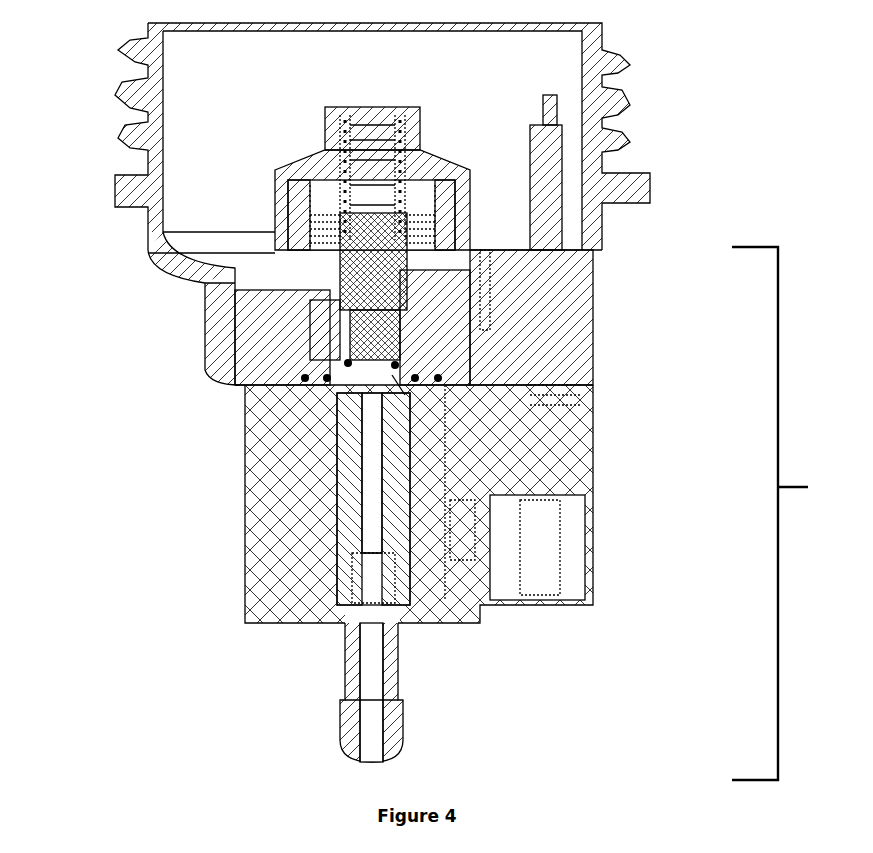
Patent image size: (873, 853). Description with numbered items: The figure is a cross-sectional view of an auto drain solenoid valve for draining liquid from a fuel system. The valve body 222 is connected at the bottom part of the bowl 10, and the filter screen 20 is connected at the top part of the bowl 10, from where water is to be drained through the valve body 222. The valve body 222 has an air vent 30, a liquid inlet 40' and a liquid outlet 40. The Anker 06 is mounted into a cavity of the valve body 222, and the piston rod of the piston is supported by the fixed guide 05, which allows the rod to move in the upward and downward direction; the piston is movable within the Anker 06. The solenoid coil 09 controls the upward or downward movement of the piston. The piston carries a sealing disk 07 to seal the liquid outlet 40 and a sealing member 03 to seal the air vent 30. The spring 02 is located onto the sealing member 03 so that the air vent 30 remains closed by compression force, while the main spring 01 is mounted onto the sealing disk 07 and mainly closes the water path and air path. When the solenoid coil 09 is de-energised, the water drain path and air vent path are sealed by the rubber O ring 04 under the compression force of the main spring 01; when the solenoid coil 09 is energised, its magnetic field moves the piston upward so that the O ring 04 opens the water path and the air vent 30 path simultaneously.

The main spring 01 is at (340, 137).
The filter screen 20 is at (410, 120).
The spring 02 is at (313, 220).
The bowl 10 is at (652, 197).
The sealing member 03 is at (428, 275).
The sealing disk 07 is at (380, 310).
The air vent 30 is at (323, 293).
The O ring 04 is at (395, 368).
The solenoid coil 09 is at (433, 555).
The fixed guide 05 is at (347, 438).
The Anker 06 is at (347, 570).
The liquid inlet 40' is at (531, 489).
The liquid outlet 40 is at (303, 692).
The valve body 222 is at (790, 513).